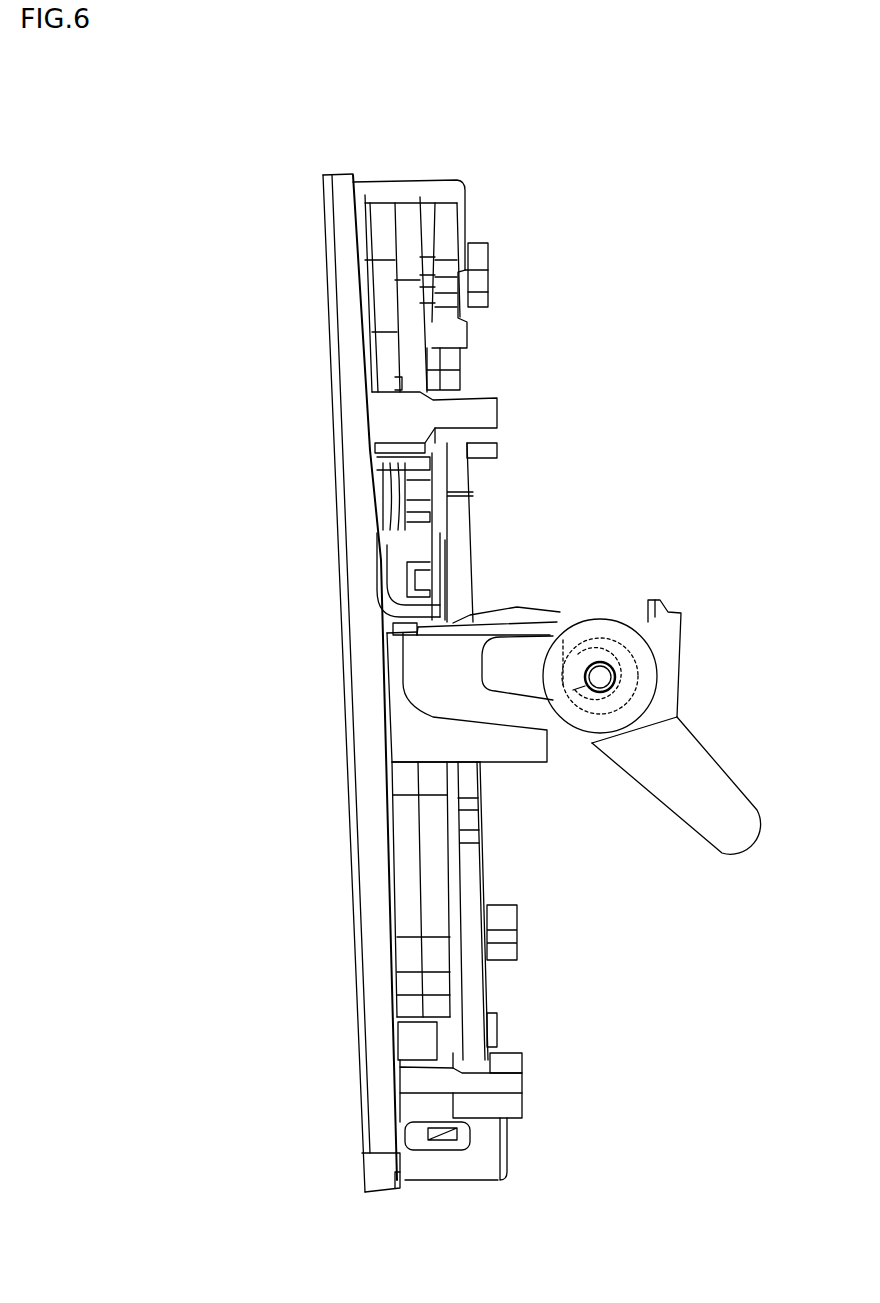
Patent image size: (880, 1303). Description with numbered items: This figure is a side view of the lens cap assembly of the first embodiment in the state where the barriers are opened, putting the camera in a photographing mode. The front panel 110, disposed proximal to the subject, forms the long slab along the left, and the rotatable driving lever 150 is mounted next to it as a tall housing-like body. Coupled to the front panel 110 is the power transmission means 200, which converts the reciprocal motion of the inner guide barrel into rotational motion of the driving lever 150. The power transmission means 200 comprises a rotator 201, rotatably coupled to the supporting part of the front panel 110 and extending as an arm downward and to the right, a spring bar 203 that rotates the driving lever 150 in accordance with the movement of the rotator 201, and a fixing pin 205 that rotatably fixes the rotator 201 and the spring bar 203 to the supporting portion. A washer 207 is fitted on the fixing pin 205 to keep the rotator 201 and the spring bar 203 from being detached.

The front panel 110 is at (367, 1155).
The driving lever 150 is at (470, 507).
The power transmission means 200 is at (629, 596).
The rotator 201 is at (747, 785).
The spring bar 203 is at (515, 617).
The fixing pin 205 is at (606, 680).
The washer 207 is at (662, 697).